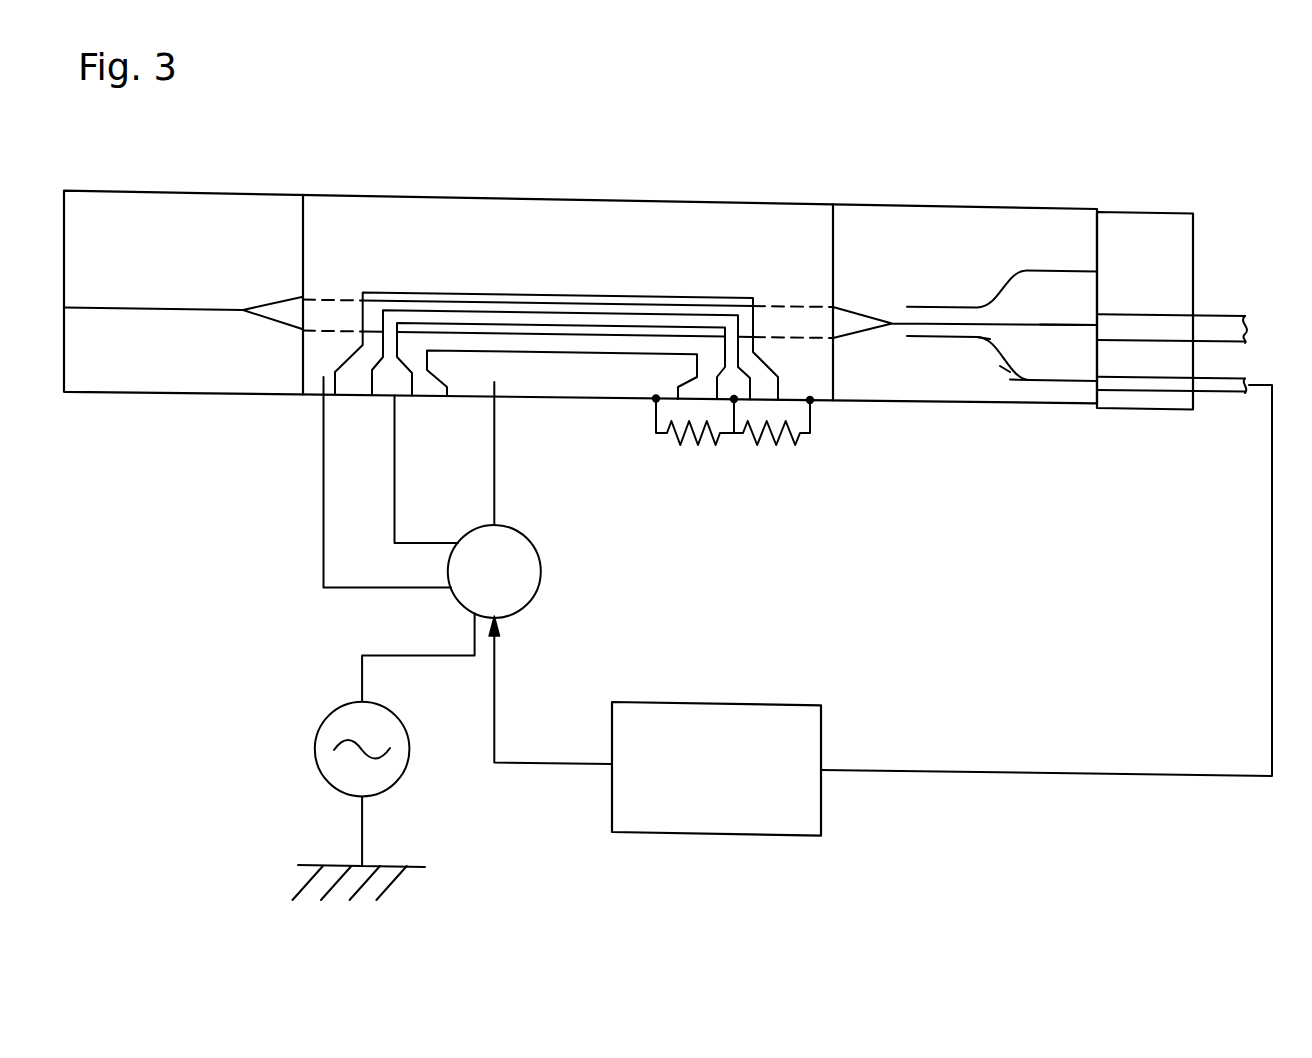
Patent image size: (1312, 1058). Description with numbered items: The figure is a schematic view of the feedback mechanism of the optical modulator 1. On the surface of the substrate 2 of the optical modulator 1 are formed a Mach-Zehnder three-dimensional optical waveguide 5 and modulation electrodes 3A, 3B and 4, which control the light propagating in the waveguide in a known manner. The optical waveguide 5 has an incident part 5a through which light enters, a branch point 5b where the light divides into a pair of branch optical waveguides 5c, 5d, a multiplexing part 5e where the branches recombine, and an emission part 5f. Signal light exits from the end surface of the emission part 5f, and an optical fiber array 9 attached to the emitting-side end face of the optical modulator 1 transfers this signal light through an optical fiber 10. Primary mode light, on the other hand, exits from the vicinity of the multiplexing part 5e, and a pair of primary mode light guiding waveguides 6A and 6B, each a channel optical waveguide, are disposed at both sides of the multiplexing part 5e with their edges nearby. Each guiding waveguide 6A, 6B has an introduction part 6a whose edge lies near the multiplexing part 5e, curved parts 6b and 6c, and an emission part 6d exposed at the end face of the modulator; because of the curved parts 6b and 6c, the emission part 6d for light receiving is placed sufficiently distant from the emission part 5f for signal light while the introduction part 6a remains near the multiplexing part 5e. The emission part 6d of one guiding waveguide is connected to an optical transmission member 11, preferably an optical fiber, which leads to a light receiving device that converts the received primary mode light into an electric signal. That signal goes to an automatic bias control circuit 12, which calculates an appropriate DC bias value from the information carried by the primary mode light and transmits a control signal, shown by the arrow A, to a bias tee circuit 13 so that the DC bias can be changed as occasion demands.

The optical modulator 1 is at (1081, 197).
The substrate 2 is at (695, 215).
The modulation electrode 3A is at (613, 387).
The modulation electrode 3B is at (568, 208).
The modulation electrode 4 is at (598, 314).
The Mach-Zehnder three-dimensional optical waveguide 5 is at (245, 303).
The incident part 5a is at (178, 307).
The branch point 5b is at (243, 312).
The branch optical waveguide 5c is at (527, 335).
The branch optical waveguide 5d is at (493, 302).
The multiplexing part 5e is at (892, 321).
The emission part 5f is at (1047, 325).
The primary mode light guiding waveguide 6A is at (1018, 384).
The primary mode light guiding waveguide 6B is at (987, 266).
The introduction part 6a is at (928, 340).
The curved part 6b is at (990, 340).
The curved part 6c is at (1010, 368).
The emission part 6d is at (1063, 385).
The optical fiber array 9 is at (1157, 235).
The optical fiber 10 is at (1172, 317).
The optical transmission member 11 is at (1160, 392).
The automatic bias control circuit 12 is at (700, 787).
The bias tee circuit 13 is at (542, 562).
The arrow A is at (496, 693).